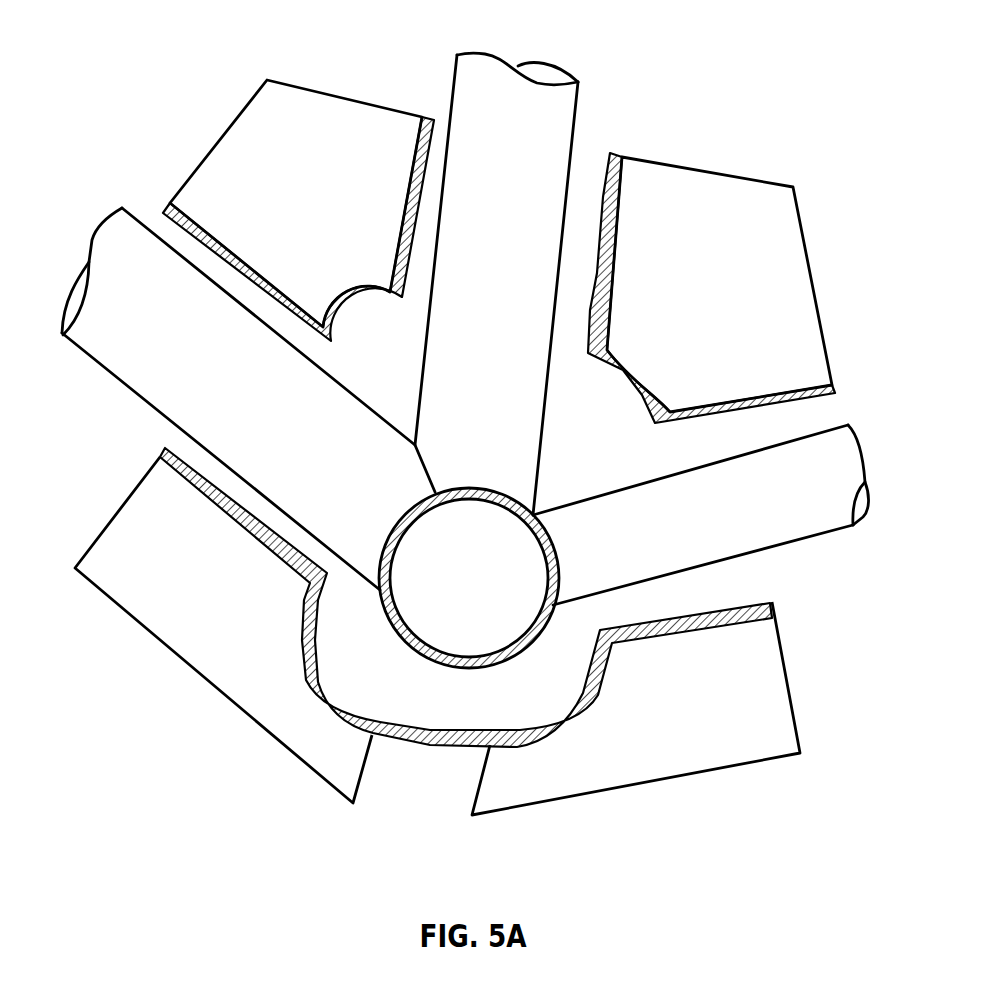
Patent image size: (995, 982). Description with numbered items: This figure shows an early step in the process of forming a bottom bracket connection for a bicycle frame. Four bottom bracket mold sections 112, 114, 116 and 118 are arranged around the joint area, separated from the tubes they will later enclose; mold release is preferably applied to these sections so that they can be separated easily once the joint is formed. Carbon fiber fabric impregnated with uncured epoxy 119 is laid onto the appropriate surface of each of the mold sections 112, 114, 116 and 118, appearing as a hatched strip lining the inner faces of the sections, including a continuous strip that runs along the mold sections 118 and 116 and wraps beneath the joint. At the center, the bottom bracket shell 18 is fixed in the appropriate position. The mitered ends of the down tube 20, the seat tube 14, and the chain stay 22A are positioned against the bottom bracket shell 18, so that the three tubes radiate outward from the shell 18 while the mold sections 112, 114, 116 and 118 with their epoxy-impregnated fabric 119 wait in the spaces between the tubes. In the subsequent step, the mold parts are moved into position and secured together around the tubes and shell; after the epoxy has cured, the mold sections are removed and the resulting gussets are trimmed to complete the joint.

The seat tube 14 is at (553, 115).
The bottom bracket shell 18 is at (405, 528).
The down tube 20 is at (153, 368).
The chain stay 22A is at (778, 527).
The bottom bracket mold section 112 is at (220, 137).
The bottom bracket mold section 114 is at (733, 213).
The bottom bracket mold section 116 is at (678, 762).
The bottom bracket mold section 118 is at (303, 732).
The carbon fiber fabric impregnated with uncured epoxy 119 is at (432, 117).